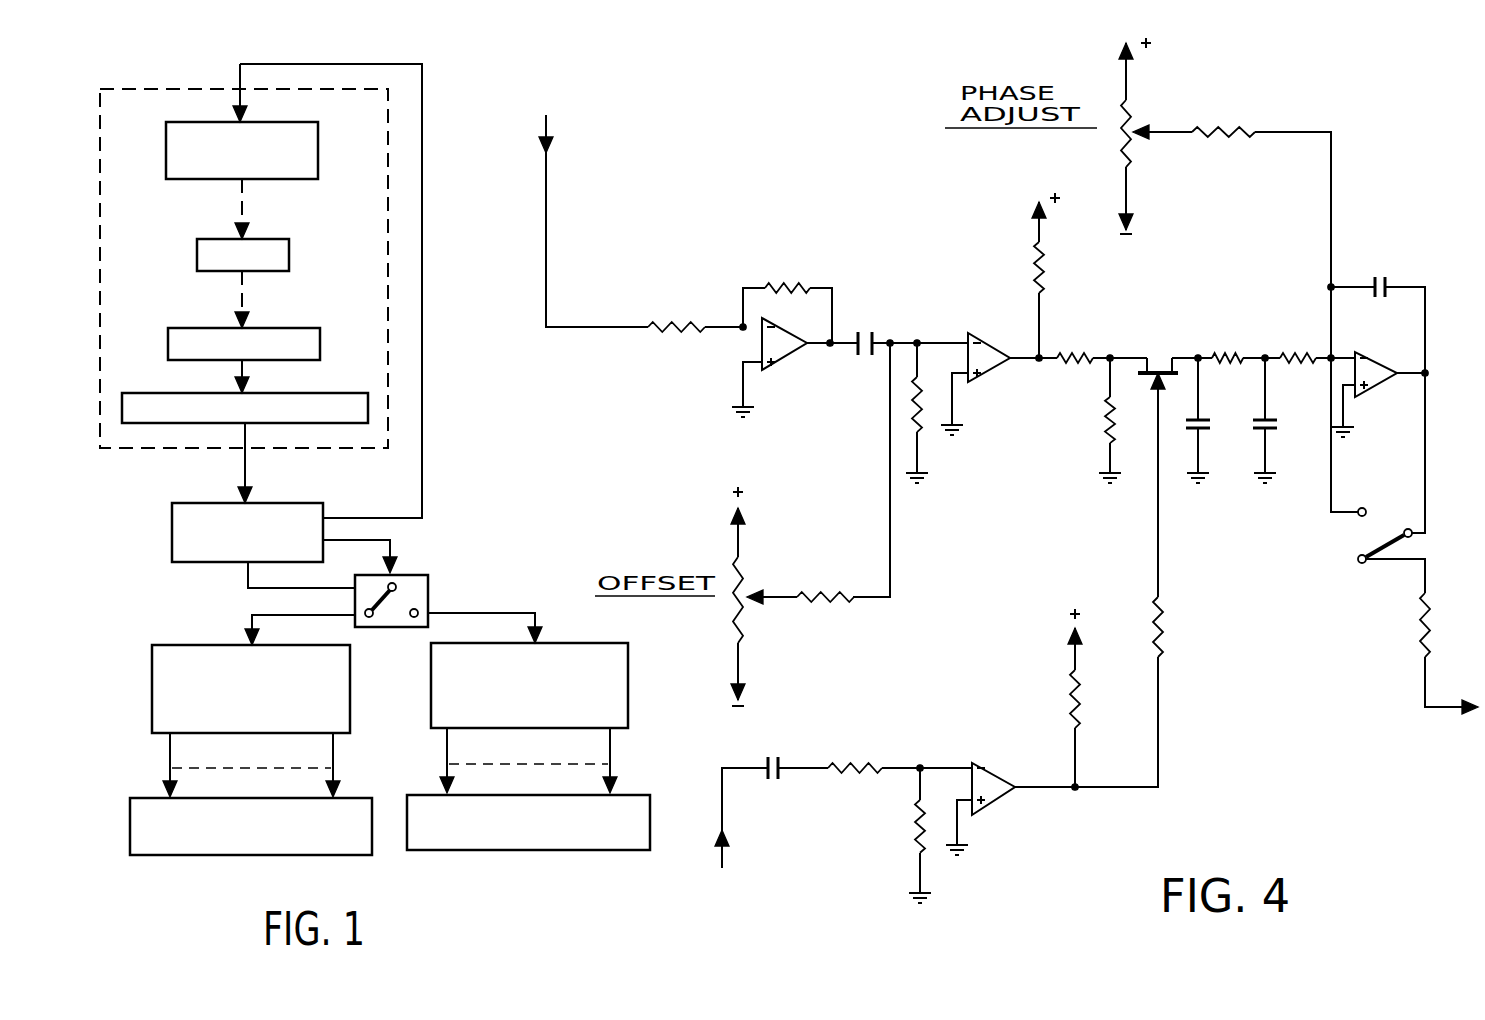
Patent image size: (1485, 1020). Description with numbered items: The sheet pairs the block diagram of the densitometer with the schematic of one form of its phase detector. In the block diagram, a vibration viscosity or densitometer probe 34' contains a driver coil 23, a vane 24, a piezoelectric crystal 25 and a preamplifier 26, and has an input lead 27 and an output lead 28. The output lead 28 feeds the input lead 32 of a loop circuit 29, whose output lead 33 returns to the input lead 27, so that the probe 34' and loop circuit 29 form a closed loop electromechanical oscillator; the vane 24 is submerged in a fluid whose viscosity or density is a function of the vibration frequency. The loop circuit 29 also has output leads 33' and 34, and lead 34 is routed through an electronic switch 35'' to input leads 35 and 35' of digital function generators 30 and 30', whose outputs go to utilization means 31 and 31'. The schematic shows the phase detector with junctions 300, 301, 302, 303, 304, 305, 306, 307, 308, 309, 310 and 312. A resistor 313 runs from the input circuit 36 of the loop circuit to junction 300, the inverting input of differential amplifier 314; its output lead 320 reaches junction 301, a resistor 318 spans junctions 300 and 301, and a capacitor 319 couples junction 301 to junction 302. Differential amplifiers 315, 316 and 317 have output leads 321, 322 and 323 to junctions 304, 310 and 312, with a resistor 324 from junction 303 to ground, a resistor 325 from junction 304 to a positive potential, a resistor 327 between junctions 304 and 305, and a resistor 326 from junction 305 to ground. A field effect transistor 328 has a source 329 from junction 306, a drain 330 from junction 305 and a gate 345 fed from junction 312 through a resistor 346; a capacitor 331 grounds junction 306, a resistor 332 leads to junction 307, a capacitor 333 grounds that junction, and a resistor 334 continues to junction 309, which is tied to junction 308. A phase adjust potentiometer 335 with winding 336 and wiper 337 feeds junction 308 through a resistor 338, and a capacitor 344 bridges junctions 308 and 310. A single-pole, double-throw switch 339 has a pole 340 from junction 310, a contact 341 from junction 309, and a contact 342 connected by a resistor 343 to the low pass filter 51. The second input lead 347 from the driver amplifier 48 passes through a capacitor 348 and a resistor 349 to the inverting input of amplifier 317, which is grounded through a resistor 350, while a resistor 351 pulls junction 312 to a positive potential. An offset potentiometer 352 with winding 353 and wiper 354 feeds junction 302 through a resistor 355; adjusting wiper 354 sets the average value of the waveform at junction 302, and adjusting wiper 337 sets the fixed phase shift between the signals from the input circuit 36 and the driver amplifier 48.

In FIG. 1, the driver coil 23 is at (318, 150).
In FIG. 1, the vane 24 is at (289, 255).
In FIG. 1, the piezoelectric crystal 25 is at (304, 328).
In FIG. 1, the preamplifier 26 is at (338, 393).
In FIG. 1, the input lead 27 is at (240, 65).
In FIG. 1, the output lead 28 is at (246, 462).
In FIG. 1, the loop circuit 29 is at (160, 548).
In FIG. 1, the digital function generator 30 is at (278, 689).
In FIG. 1, the digital function generator 30' is at (529, 669).
In FIG. 1, the utilization means 31 is at (266, 794).
In FIG. 1, the utilization means 31' is at (549, 789).
In FIG. 1, the input lead 32 is at (250, 500).
In FIG. 1, the output lead 33 is at (372, 496).
In FIG. 1, the output lead 33' is at (387, 545).
In FIG. 1, the output lead 34 is at (271, 579).
In FIG. 1, the densitometer probe 34' is at (244, 288).
In FIG. 1, the input lead 35 is at (270, 625).
In FIG. 1, the input lead 35' is at (485, 606).
In FIG. 1, the electronic switch 35'' is at (423, 581).
In FIG. 4, the input circuit 36 is at (548, 128).
In FIG. 4, the driver amplifier 48 is at (738, 842).
In FIG. 4, the low pass filter 51 is at (1435, 712).
In FIG. 4, the junction 300 is at (743, 324).
In FIG. 4, the junction 301 is at (835, 340).
In FIG. 4, the junction 302 is at (890, 340).
In FIG. 4, the junction 303 is at (920, 341).
In FIG. 4, the junction 304 is at (1040, 361).
In FIG. 4, the junction 305 is at (1112, 355).
In FIG. 4, the junction 306 is at (1200, 361).
In FIG. 4, the junction 307 is at (1267, 357).
In FIG. 4, the junction 308 is at (1329, 286).
In FIG. 4, the junction 309 is at (1336, 355).
In FIG. 4, the junction 310 is at (1422, 378).
In FIG. 4, the junction 312 is at (1078, 786).
In FIG. 4, the resistor 313 is at (660, 337).
In FIG. 4, the differential amplifier 314 is at (788, 366).
In FIG. 4, the differential amplifier 315 is at (1000, 380).
In FIG. 4, the differential amplifier 316 is at (1370, 395).
In FIG. 4, the differential amplifier 317 is at (998, 802).
In FIG. 4, the resistor 318 is at (800, 286).
In FIG. 4, the capacitor 319 is at (880, 348).
In FIG. 4, the output lead 320 is at (815, 346).
In FIG. 4, the output lead 321 is at (1013, 355).
In FIG. 4, the output lead 322 is at (1412, 372).
In FIG. 4, the output lead 323 is at (1050, 786).
In FIG. 4, the resistor 324 is at (920, 425).
In FIG. 4, the resistor 325 is at (1042, 275).
In FIG. 4, the resistor 326 is at (1081, 420).
In FIG. 4, the resistor 327 is at (1076, 354).
In FIG. 4, the field effect transistor 328 is at (1170, 400).
In FIG. 4, the source 329 is at (1170, 355).
In FIG. 4, the drain 330 is at (1150, 356).
In FIG. 4, the capacitor 331 is at (1202, 427).
In FIG. 4, the resistor 332 is at (1232, 356).
In FIG. 4, the capacitor 333 is at (1269, 427).
In FIG. 4, the resistor 334 is at (1288, 363).
In FIG. 4, the potentiometer 335 is at (1165, 85).
In FIG. 4, the winding 336 is at (1122, 141).
In FIG. 4, the wiper 337 is at (1166, 134).
In FIG. 4, the resistor 338 is at (1240, 129).
In FIG. 4, the single-pole, double-throw switch 339 is at (1338, 545).
In FIG. 4, the pole 340 is at (1383, 531).
In FIG. 4, the contact 341 is at (1356, 515).
In FIG. 4, the contact 342 is at (1367, 561).
In FIG. 4, the resistor 343 is at (1422, 635).
In FIG. 4, the capacitor 344 is at (1388, 281).
In FIG. 4, the gate 345 is at (1150, 388).
In FIG. 4, the resistor 346 is at (1162, 650).
In FIG. 4, the input lead 347 is at (745, 768).
In FIG. 4, the capacitor 348 is at (782, 765).
In FIG. 4, the resistor 349 is at (860, 766).
In FIG. 4, the resistor 350 is at (916, 827).
In FIG. 4, the resistor 351 is at (1073, 672).
In FIG. 4, the potentiometer 352 is at (736, 566).
In FIG. 4, the winding 353 is at (736, 626).
In FIG. 4, the wiper 354 is at (780, 600).
In FIG. 4, the resistor 355 is at (832, 594).